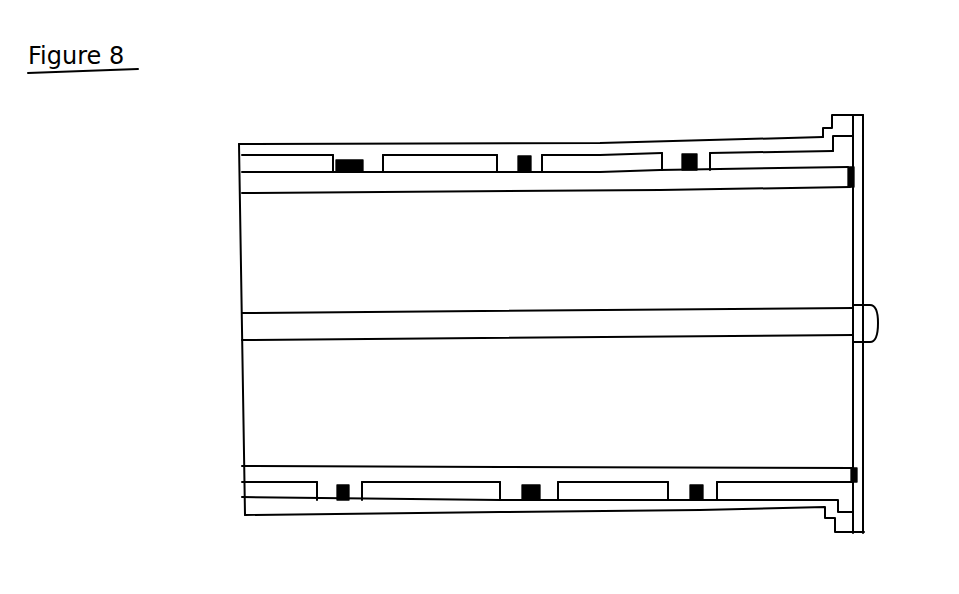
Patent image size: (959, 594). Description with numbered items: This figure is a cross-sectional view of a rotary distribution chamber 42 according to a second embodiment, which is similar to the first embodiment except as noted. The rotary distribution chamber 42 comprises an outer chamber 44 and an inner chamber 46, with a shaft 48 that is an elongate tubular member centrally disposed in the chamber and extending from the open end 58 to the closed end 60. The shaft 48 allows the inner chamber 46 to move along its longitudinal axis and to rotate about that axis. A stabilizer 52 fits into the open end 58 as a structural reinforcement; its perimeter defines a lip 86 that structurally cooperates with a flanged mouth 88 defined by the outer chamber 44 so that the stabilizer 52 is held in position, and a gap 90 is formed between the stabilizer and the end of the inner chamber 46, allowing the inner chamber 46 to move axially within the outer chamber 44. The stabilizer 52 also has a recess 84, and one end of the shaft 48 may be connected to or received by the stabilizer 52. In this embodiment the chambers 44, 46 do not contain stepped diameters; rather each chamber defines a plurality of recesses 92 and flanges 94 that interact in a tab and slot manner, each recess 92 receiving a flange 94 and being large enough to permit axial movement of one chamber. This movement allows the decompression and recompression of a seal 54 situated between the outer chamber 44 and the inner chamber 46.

The rotary distribution chamber 42 is at (217, 107).
The outer chamber 44 is at (295, 509).
The inner chamber 46 is at (420, 480).
The shaft 48 is at (520, 323).
The stabilizer 52 is at (862, 217).
The seal 54 is at (700, 155).
The open end 58 is at (862, 438).
The closed end 60 is at (242, 427).
The recess 84 is at (872, 305).
The lip 86 is at (862, 122).
The flanged mouth 88 is at (846, 115).
The gap 90 is at (858, 186).
The recess 92 is at (399, 163).
The flange 94 is at (510, 160).